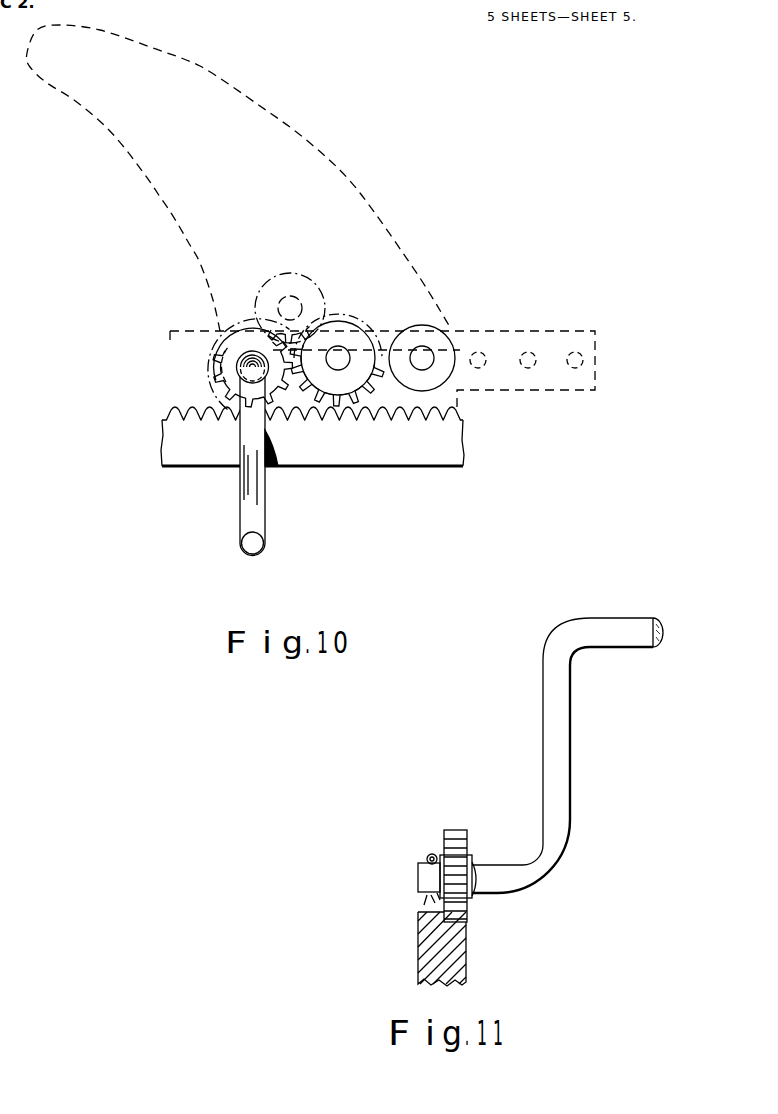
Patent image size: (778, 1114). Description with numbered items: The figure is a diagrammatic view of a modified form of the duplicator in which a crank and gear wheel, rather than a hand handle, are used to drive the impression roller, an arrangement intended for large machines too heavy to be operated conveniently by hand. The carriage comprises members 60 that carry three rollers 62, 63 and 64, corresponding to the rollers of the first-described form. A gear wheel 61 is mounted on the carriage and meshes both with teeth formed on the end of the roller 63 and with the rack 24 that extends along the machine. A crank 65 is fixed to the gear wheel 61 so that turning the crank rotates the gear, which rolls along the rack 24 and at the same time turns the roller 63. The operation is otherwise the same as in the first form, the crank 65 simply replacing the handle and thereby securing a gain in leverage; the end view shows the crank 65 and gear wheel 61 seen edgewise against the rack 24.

In FIG. 10, the rack 24 is at (178, 452).
In FIG. 10, the carriage member 60 is at (373, 227).
In FIG. 10, the gear wheel 61 is at (232, 348).
In FIG. 11, the gear wheel 61 is at (453, 836).
In FIG. 10, the roller 62 is at (432, 340).
In FIG. 10, the roller 63 is at (352, 337).
In FIG. 10, the roller 64 is at (287, 283).
In FIG. 10, the crank 65 is at (266, 468).
In FIG. 11, the crank 65 is at (555, 650).